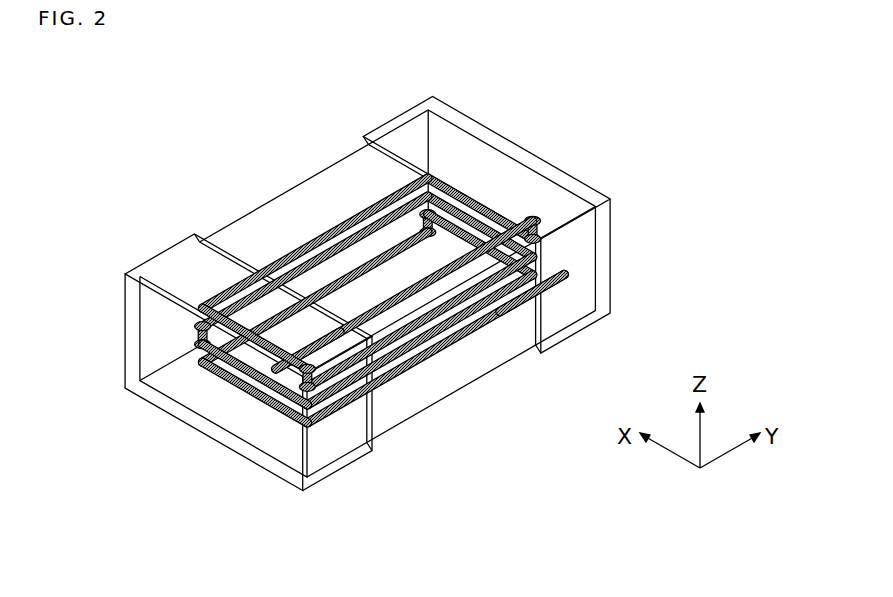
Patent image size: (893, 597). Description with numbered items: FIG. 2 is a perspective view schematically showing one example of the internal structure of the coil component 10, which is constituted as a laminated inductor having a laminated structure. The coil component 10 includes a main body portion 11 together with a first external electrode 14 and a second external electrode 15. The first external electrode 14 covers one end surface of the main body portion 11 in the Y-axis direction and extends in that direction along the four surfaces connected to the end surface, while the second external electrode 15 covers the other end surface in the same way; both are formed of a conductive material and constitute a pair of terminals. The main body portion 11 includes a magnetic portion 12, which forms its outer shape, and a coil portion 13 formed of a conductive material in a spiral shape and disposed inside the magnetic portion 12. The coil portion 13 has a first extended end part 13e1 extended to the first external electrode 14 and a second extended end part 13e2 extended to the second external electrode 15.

The coil component 10 is at (240, 124).
The main body portion 11 is at (546, 429).
The magnetic portion 12 is at (408, 397).
The coil portion 13 is at (447, 347).
The first extended end part 13e1 is at (552, 290).
The second extended end part 13e2 is at (258, 398).
The first external electrode 14 is at (410, 113).
The second external electrode 15 is at (170, 253).